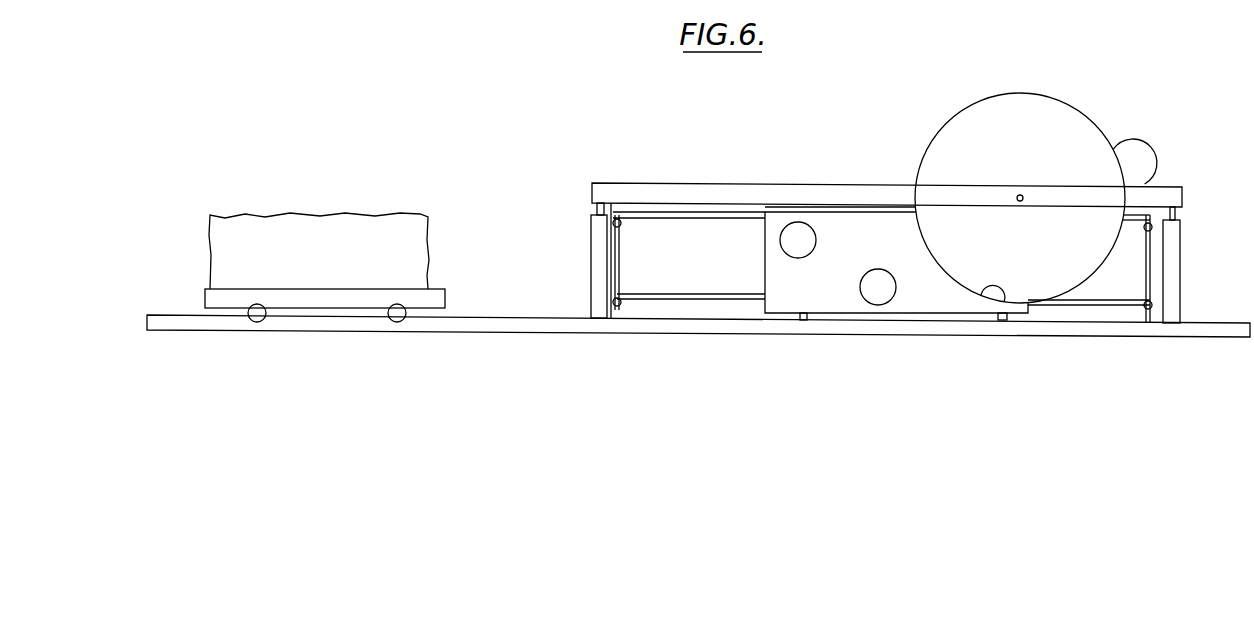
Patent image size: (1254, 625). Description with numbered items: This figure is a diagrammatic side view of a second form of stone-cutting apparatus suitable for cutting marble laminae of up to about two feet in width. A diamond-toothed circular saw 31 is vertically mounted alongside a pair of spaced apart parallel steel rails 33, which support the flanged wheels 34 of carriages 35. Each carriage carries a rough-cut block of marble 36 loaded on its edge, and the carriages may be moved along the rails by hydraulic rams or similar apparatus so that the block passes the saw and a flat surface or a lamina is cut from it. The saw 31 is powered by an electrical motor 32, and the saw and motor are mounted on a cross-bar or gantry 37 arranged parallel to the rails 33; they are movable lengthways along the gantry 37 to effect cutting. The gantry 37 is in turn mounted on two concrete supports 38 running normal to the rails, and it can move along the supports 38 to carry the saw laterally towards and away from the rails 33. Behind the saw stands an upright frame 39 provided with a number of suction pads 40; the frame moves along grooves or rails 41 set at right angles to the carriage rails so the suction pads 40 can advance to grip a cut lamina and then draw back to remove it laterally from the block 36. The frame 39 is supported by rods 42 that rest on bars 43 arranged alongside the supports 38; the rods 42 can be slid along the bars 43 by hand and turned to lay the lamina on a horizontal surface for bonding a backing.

The diamond-toothed circular saw 31 is at (1060, 122).
The electrical motor 32 is at (1143, 145).
The steel rails 33 is at (498, 325).
The flanged wheels 34 is at (398, 315).
The carriages 35 is at (437, 297).
The block of marble 36 is at (308, 266).
The gantry 37 is at (725, 193).
The concrete supports 38 is at (597, 243).
The upright frame 39 is at (852, 253).
The suction pads 40 is at (798, 247).
The grooves or rails 41 is at (803, 318).
The rods 42 is at (620, 223).
The bars 43 is at (622, 305).